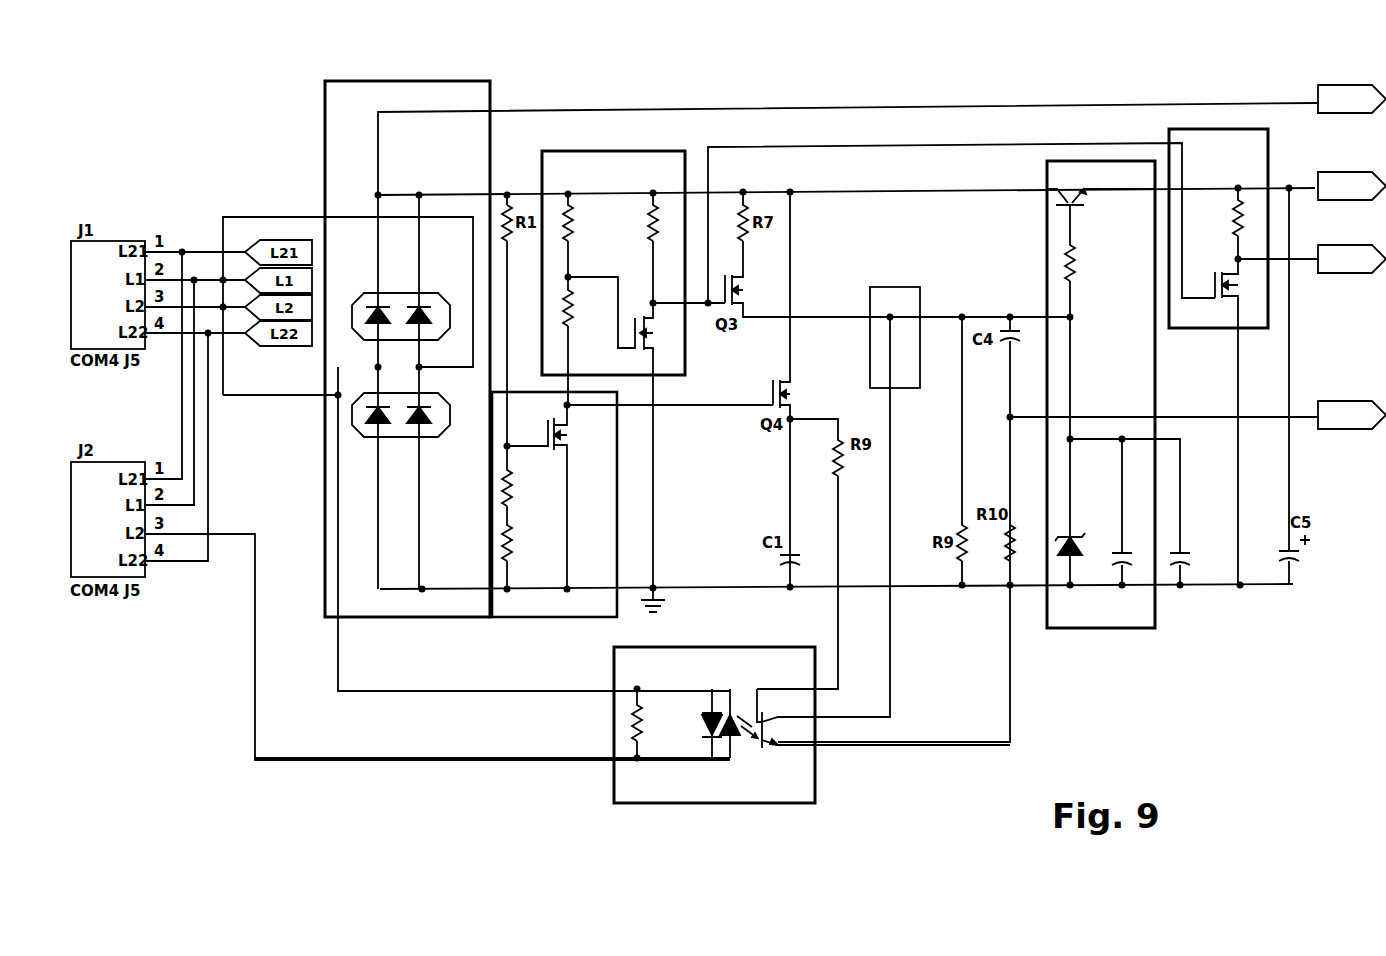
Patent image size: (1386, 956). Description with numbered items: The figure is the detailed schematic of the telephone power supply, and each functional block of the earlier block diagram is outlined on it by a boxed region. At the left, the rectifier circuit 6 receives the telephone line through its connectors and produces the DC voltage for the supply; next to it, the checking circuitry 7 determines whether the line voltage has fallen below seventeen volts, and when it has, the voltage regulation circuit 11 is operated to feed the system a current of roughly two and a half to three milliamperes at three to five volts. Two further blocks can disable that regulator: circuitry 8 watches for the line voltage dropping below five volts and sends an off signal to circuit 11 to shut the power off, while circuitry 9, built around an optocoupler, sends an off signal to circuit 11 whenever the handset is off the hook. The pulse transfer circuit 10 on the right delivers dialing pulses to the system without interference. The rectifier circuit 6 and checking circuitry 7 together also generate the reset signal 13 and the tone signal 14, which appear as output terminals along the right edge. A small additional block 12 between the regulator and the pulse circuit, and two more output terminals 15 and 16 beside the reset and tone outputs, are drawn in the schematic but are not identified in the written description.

The rectifier circuit 6 is at (357, 81).
The line voltage checking circuitry 7 is at (618, 151).
The low-voltage shutoff circuitry 8 is at (545, 617).
The off-hook sensing circuitry 9 is at (645, 803).
The pulse transfer circuit 10 is at (1168, 129).
The voltage regulation circuit 11 is at (1121, 628).
The signal block 12 is at (900, 287).
The reset signal 13 is at (1352, 403).
The tone signal 14 is at (1352, 86).
The PULSE terminal 15 is at (1352, 247).
The VDD terminal 16 is at (1352, 174).